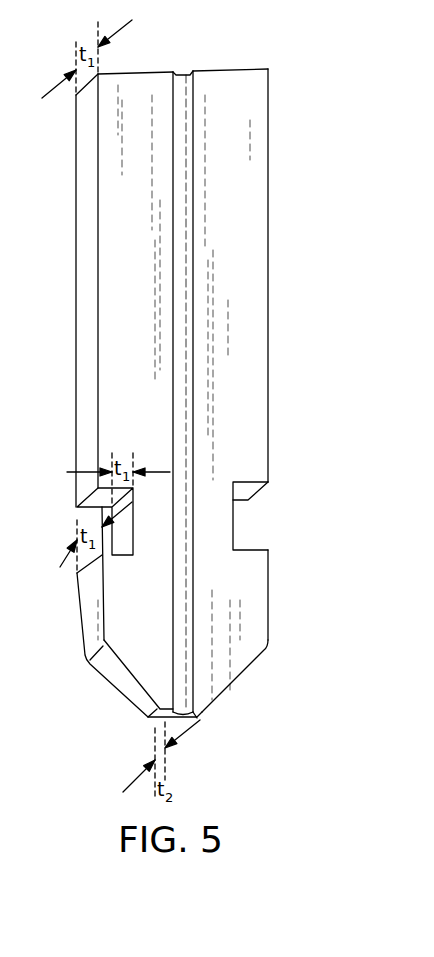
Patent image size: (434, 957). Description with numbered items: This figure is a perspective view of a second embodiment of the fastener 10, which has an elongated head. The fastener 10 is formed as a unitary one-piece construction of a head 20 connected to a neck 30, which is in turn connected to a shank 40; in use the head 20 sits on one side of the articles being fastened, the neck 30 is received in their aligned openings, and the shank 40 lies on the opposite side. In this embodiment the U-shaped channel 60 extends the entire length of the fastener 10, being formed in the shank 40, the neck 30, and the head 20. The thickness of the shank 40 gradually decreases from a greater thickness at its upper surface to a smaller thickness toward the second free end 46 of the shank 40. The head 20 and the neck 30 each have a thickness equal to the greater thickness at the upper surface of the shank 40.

The fastener 10 is at (272, 118).
The head 20 is at (243, 258).
The neck 30 is at (208, 509).
The shank 40 is at (245, 638).
The second free end 46 is at (197, 718).
The U-shaped channel 60 is at (200, 366).